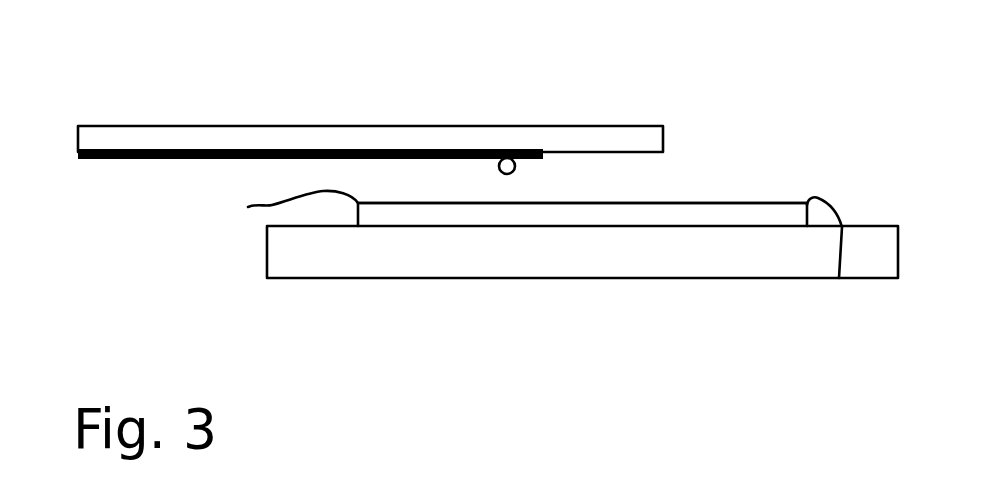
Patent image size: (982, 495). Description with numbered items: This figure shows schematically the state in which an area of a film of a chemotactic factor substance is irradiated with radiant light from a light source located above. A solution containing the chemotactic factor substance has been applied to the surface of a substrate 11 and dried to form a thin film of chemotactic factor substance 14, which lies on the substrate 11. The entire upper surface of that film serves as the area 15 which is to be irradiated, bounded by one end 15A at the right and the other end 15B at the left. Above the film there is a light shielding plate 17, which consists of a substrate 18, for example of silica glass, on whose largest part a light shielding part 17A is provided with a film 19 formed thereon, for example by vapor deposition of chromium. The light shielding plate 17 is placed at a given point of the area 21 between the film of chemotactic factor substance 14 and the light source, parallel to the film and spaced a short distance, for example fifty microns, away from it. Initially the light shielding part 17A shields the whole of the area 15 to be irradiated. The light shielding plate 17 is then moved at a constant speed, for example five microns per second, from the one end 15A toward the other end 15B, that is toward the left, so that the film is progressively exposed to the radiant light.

The substrate 11 is at (727, 250).
The film of chemotactic factor substance 14 is at (580, 217).
The area to be irradiated 15 is at (677, 203).
The one end of the area to be irradiated 15A is at (835, 265).
The other end of the area to be irradiated 15B is at (273, 209).
The light shielding plate 17 is at (140, 125).
The light shielding part 17A is at (154, 161).
The substrate of the light shielding plate 18 is at (439, 137).
The film 19 is at (500, 163).
The area between film and light source 21 is at (775, 167).